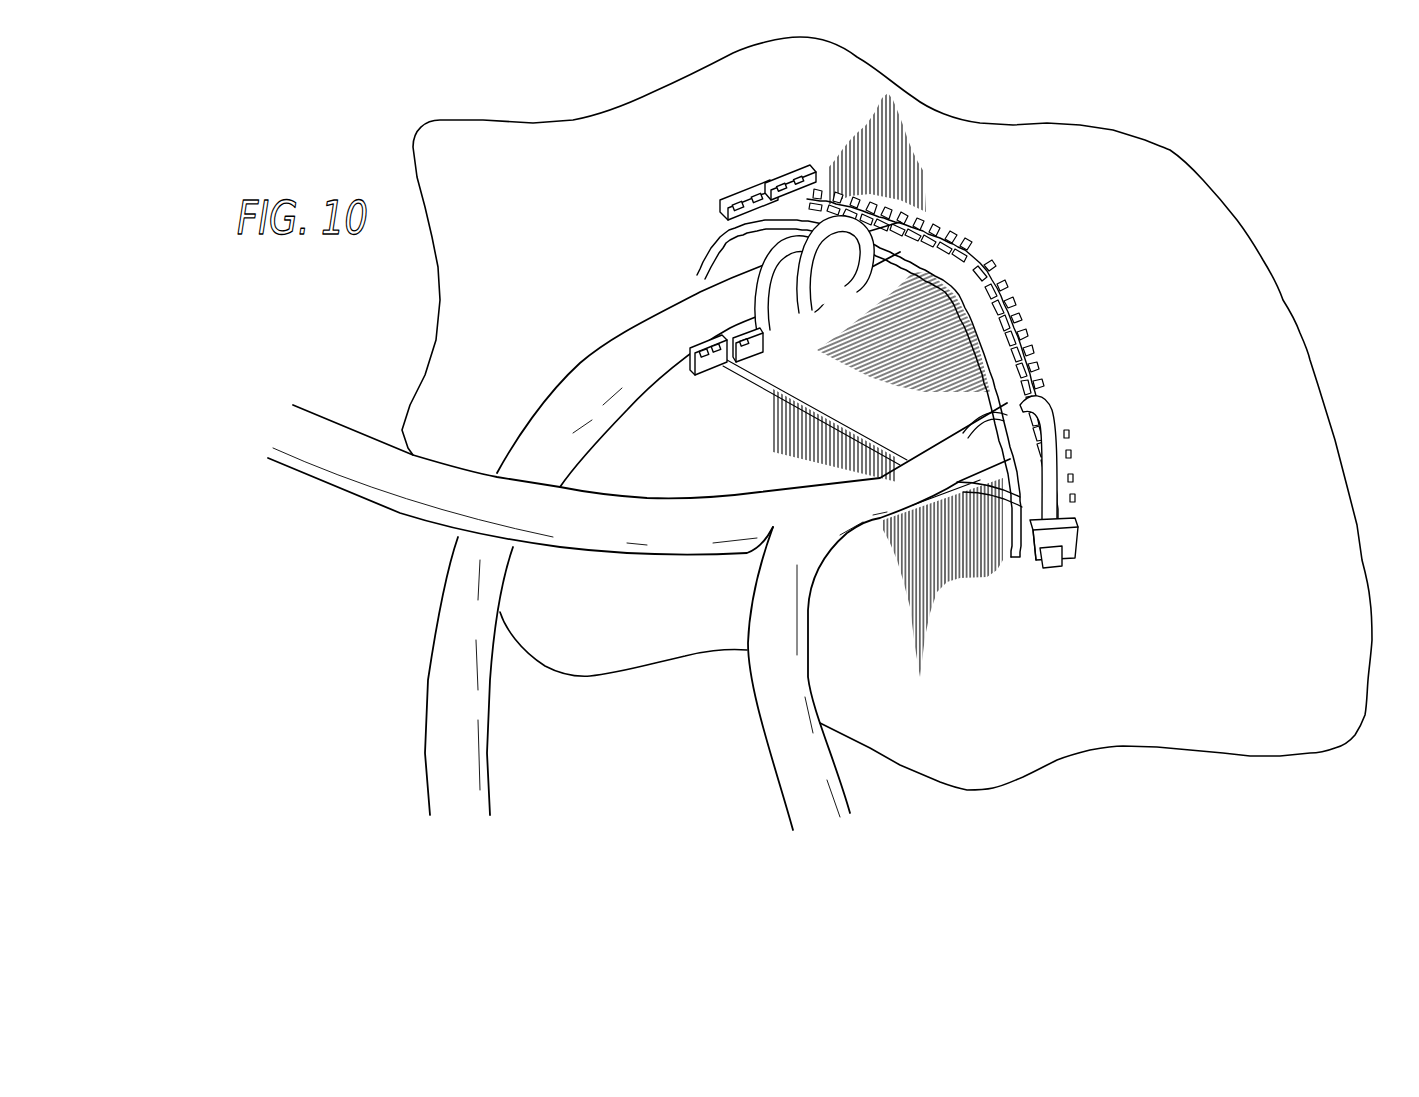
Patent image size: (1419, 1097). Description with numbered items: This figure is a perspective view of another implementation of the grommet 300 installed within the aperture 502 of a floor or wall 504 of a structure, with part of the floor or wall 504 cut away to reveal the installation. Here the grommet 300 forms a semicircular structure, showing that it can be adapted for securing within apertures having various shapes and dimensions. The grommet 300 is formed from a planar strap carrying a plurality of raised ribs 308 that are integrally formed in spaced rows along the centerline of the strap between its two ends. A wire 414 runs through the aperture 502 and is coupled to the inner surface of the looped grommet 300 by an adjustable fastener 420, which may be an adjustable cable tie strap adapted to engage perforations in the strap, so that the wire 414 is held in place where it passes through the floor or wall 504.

The grommet 300 is at (1010, 352).
The raised ribs 308 is at (988, 278).
The wire 414 is at (638, 344).
The adjustable fastener 420 is at (1060, 486).
The aperture 502 is at (833, 420).
The wall or floor 504 is at (1226, 427).